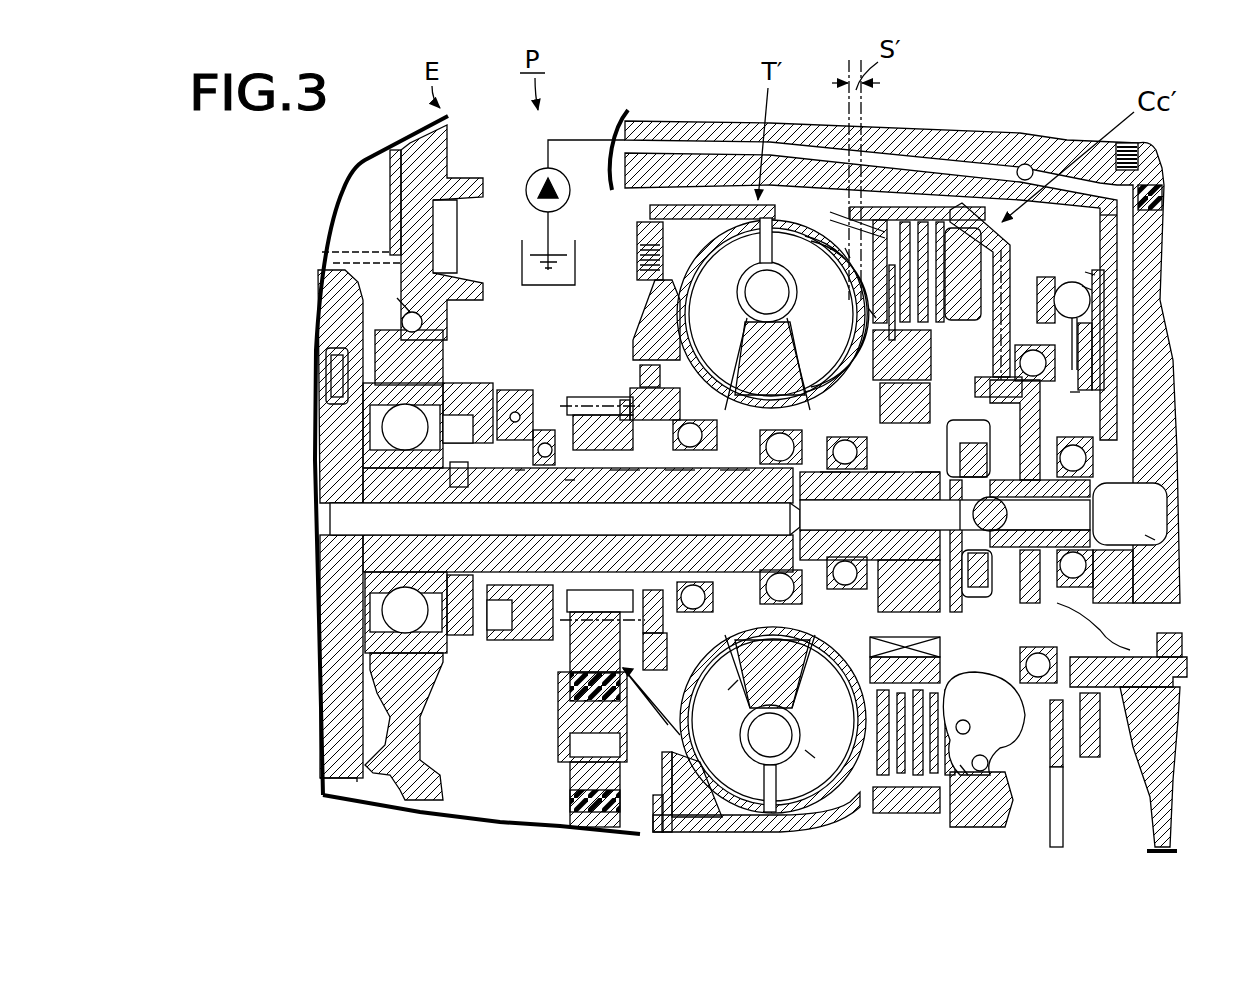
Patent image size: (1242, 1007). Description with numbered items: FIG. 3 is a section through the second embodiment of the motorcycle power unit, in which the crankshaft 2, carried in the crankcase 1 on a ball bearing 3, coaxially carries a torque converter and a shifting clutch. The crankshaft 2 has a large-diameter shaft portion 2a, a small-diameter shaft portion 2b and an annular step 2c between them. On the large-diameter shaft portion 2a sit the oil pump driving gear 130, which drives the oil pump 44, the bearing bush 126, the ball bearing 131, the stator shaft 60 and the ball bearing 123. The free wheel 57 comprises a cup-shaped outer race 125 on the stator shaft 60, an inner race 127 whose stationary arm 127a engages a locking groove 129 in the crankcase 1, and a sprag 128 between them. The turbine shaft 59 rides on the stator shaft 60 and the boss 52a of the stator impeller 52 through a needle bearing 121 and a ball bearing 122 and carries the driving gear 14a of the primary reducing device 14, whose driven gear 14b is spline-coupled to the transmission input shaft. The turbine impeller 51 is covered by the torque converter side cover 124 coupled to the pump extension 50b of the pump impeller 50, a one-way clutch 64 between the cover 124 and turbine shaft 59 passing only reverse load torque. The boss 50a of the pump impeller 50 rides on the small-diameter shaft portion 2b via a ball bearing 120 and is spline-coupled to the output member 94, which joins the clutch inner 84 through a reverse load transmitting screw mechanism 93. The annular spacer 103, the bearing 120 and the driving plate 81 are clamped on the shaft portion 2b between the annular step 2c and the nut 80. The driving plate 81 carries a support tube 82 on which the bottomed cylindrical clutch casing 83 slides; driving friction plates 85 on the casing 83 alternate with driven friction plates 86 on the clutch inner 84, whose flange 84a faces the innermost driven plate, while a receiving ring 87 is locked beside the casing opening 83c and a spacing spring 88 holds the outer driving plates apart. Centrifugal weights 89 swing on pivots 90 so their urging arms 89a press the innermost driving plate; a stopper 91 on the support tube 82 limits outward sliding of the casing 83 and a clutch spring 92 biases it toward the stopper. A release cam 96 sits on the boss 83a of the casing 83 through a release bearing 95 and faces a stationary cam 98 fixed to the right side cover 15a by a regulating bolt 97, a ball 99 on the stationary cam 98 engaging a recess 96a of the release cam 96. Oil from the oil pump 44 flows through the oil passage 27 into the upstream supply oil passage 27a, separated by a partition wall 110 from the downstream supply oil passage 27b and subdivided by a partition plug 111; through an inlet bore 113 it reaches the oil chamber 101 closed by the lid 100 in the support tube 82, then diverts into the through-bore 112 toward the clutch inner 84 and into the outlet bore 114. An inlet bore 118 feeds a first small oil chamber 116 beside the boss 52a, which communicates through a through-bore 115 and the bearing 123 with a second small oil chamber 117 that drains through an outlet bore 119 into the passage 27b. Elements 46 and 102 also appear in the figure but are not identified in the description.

The crankcase 1 is at (440, 135).
The crankshaft 2 is at (316, 562).
The large-diameter shaft portion 2a is at (433, 487).
The small-diameter shaft portion 2b is at (893, 597).
The annular step 2c is at (800, 503).
The ball bearing 3 is at (422, 323).
The primary reducing device 14 is at (700, 727).
The driving gear 14a is at (573, 643).
The driven gear 14b is at (580, 680).
The right side cover 15a is at (920, 136).
The oil passage 27 is at (1040, 167).
The upstream supply oil passage 27a is at (1150, 537).
The downstream supply oil passage 27b is at (510, 505).
The oil pump 44 is at (530, 180).
The oil tank 46 is at (520, 255).
The pump impeller 50 is at (780, 215).
The boss of pump impeller 50a is at (853, 630).
The pump extension 50b is at (687, 213).
The turbine impeller 51 is at (733, 222).
The stator impeller 52 is at (760, 317).
The boss of stator impeller 52a is at (775, 720).
The free wheel 57 is at (540, 385).
The turbine shaft 59 is at (520, 472).
The stator shaft 60 is at (570, 482).
The one-way clutch 64 is at (640, 395).
The nut 80 is at (1045, 445).
The driving plate 81 is at (957, 270).
The support tube 82 is at (1067, 607).
The clutch casing 83 is at (900, 215).
The boss 83a is at (1075, 392).
The opening 83c is at (867, 760).
The clutch inner 84 is at (860, 290).
The flange 84a is at (995, 270).
The driving friction plates 85 is at (835, 208).
The driven friction plates 86 is at (873, 313).
The receiving ring 87 is at (847, 253).
The spacing spring 88 is at (885, 812).
The centrifugal weights 89 is at (1032, 730).
The urging arm 89a is at (965, 772).
The pivots 90 is at (1000, 803).
The stopper 91 is at (1110, 623).
The clutch spring 92 is at (973, 677).
The reverse load transmitting screw mechanism 93 is at (840, 690).
The output member 94 is at (870, 473).
The release bearing 95 is at (1043, 370).
The release cam 96 is at (1033, 285).
The recess 96a is at (1087, 287).
The regulating bolt 97 is at (1173, 683).
The stationary cam 98 is at (1093, 322).
The ball 99 is at (1090, 273).
The lid 100 is at (1100, 463).
The oil chamber 101 is at (1097, 497).
The pivot pin 102 is at (985, 775).
The annular spacer 103 is at (822, 563).
The partition wall 110 is at (772, 628).
The partition plug 111 is at (1100, 552).
The through-bore 112 is at (877, 377).
The inlet bore 113 is at (1031, 513).
The outlet bore 114 is at (930, 502).
The through-bore 115 is at (757, 523).
The first small oil chamber 116 is at (810, 755).
The second small oil chamber 117 is at (733, 685).
The inlet bore 118 is at (835, 502).
The outlet bore 119 is at (735, 502).
The ball bearing 120 is at (885, 502).
The needle bearing 121 is at (625, 502).
The ball bearing 122 is at (680, 495).
The ball bearing 123 is at (753, 397).
The torque converter side cover 124 is at (655, 345).
The outer race 125 is at (500, 643).
The bearing bush 126 is at (490, 577).
The inner race 127 is at (450, 607).
The stationary arm 127a is at (503, 385).
The sprag 128 is at (500, 390).
The locking groove 129 is at (435, 395).
The oil pump driving gear 130 is at (437, 655).
The ball bearing 131 is at (548, 420).